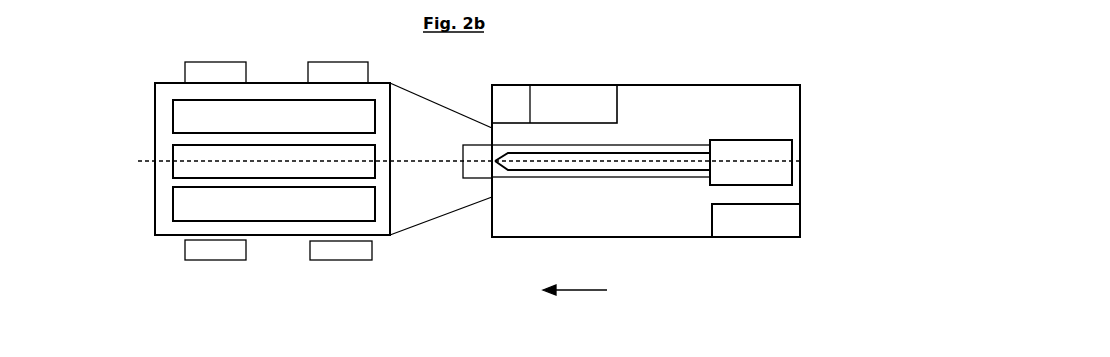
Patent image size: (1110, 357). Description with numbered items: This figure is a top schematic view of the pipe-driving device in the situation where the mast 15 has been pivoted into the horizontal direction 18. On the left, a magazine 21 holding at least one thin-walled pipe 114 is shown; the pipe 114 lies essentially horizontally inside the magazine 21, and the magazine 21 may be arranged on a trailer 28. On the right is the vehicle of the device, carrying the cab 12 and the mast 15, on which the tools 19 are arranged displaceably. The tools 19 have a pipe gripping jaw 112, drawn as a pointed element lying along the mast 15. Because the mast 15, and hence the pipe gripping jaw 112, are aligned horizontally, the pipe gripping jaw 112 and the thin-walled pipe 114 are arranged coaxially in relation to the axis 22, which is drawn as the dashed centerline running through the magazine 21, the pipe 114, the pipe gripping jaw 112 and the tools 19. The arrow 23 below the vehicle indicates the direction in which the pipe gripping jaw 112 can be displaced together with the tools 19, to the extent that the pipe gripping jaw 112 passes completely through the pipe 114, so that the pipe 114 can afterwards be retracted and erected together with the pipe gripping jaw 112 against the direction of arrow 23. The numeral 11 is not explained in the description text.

The magazine 21 is at (172, 48).
The thin-walled pipe 114 is at (185, 152).
The trailer 28 is at (155, 193).
The second module / device housing 11 is at (715, 80).
The cab 12 is at (580, 104).
The mast 15 is at (543, 173).
The pipe gripping jaw 112 is at (635, 165).
The tools 19 is at (740, 148).
The horizontal direction 18 is at (772, 222).
The axis 22 is at (805, 158).
The arrow 23 is at (586, 291).